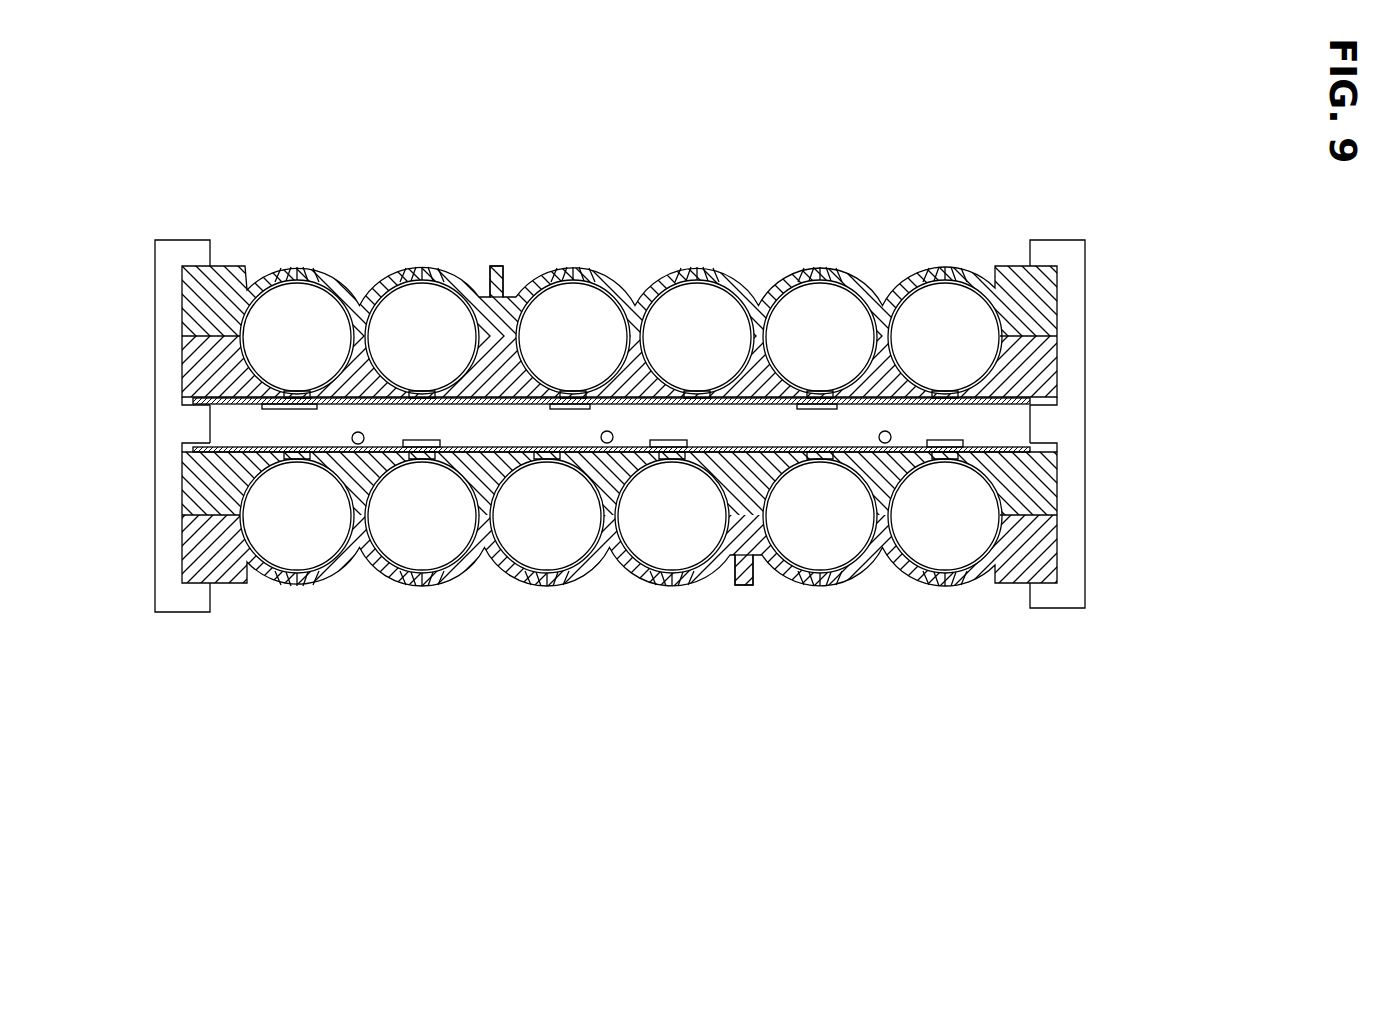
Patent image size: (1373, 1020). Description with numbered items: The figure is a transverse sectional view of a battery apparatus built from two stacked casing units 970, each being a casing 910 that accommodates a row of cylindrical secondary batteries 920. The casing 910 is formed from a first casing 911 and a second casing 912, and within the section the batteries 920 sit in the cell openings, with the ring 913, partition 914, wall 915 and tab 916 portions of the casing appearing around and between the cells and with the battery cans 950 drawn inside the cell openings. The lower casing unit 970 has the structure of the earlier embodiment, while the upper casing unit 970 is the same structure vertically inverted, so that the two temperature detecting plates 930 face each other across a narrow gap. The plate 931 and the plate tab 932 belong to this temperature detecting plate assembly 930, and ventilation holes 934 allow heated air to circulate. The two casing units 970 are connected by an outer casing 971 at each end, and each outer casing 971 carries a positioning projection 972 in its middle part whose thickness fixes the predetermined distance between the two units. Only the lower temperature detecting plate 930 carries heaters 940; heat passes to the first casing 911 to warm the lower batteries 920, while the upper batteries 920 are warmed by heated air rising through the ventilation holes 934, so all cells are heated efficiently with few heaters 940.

The casing 910 is at (716, 425).
The first casing 911 is at (1053, 358).
The second casing 912 is at (1050, 299).
The cushion ring 913 is at (384, 280).
The partition rib 914 is at (463, 273).
The holder wall 915 is at (444, 253).
The connection tab 916 is at (945, 438).
The secondary battery 920 is at (598, 305).
The temperature detecting plate 930 is at (539, 423).
The bus bar plate 931 is at (363, 404).
The plate tab 932 is at (183, 472).
The ventilation hole 934 is at (548, 452).
The heater 940 is at (355, 432).
The battery can 950 is at (426, 391).
The casing unit 970 is at (841, 222).
The outer casing 971 is at (160, 348).
The positioning projection 972 is at (190, 432).